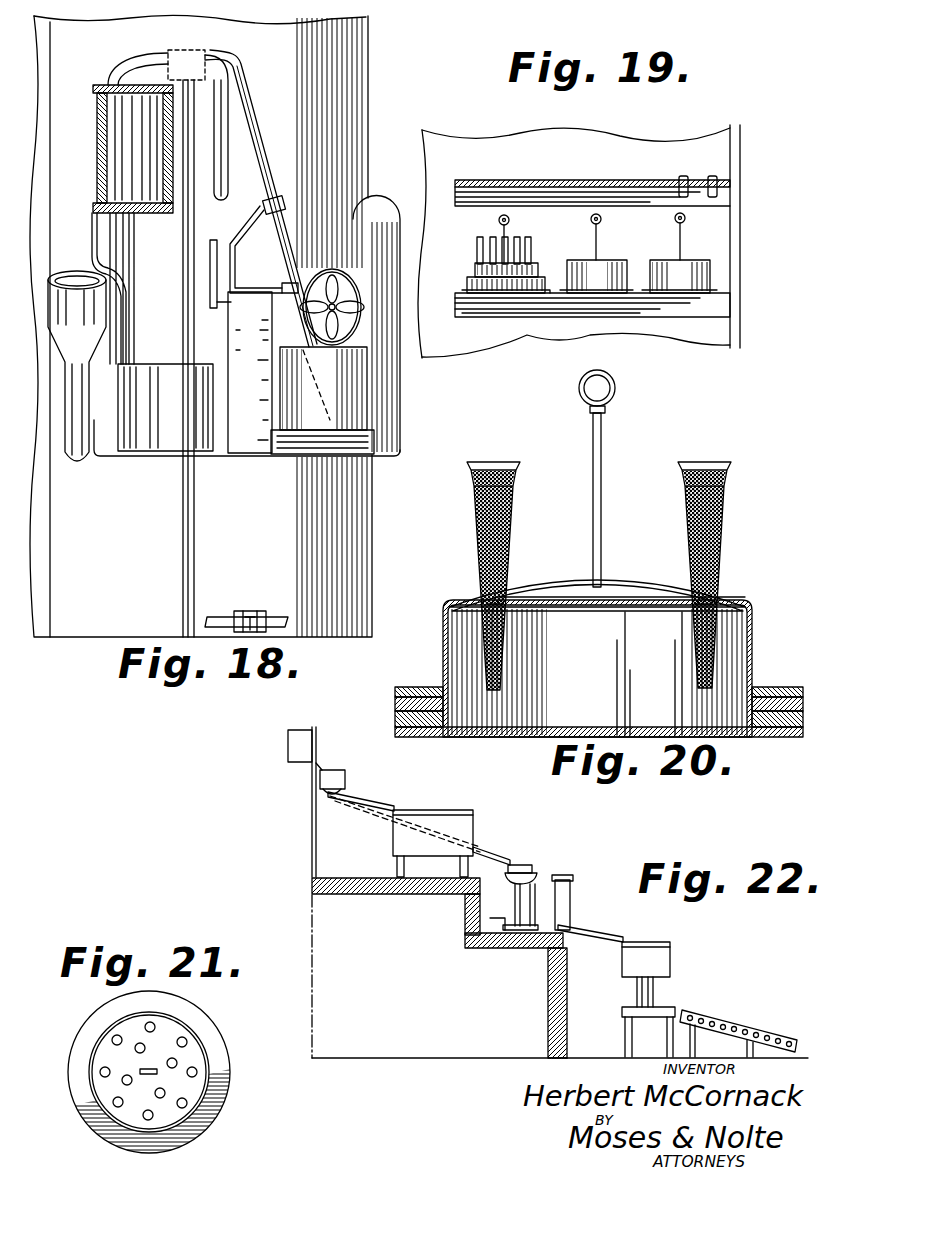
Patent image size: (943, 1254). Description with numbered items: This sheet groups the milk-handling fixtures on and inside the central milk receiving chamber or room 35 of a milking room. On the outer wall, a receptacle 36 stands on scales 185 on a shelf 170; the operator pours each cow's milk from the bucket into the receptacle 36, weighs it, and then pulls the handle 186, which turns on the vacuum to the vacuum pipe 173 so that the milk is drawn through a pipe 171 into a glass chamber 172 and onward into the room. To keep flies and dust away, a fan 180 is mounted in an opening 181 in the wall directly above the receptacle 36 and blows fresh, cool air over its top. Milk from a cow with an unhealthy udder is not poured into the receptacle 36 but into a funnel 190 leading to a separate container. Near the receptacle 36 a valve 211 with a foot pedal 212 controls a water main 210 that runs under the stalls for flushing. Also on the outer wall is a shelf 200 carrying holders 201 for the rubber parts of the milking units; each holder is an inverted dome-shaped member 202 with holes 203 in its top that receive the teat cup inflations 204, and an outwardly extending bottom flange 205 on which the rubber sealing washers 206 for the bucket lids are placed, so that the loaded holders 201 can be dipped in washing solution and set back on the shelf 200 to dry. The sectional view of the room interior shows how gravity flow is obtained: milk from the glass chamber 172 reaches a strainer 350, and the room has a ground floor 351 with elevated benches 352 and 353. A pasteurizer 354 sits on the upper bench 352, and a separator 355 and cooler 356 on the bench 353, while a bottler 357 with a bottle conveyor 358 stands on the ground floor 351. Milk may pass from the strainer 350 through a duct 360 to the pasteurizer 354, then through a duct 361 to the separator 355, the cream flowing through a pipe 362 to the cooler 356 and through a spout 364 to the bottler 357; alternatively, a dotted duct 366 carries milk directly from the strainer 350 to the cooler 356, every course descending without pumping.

In FIG. 18, the milk receiving chamber or room 35 is at (364, 79).
In FIG. 18, the receptacle 36 is at (357, 411).
In FIG. 18, the shelf 170 is at (292, 458).
In FIG. 18, the pipe 171 is at (280, 134).
In FIG. 18, the glass chamber 172 is at (100, 143).
In FIG. 22, the glass chamber 172 is at (292, 758).
In FIG. 18, the vacuum pipe 173 is at (222, 110).
In FIG. 18, the fan 180 is at (352, 272).
In FIG. 18, the opening 181 is at (336, 292).
In FIG. 18, the scales 185 is at (237, 418).
In FIG. 18, the handle 186 is at (212, 274).
In FIG. 18, the funnel 190 is at (88, 338).
In FIG. 19, the shelf 200 is at (727, 297).
In FIG. 19, the holders 201 is at (683, 238).
In FIG. 20, the holders 201 is at (603, 453).
In FIG. 21, the holders 201 is at (140, 1071).
In FIG. 19, the inverted dome-shaped members 202 is at (697, 277).
In FIG. 20, the inverted dome-shaped members 202 is at (638, 586).
In FIG. 21, the inverted dome-shaped members 202 is at (137, 1104).
In FIG. 20, the holes 203 is at (720, 597).
In FIG. 21, the holes 203 is at (196, 1069).
In FIG. 19, the teat cup inflations 204 is at (495, 240).
In FIG. 20, the teat cup inflations 204 is at (720, 506).
In FIG. 20, the bottom flange 205 is at (423, 738).
In FIG. 21, the bottom flange 205 is at (222, 1103).
In FIG. 19, the rubber sealing washers 206 is at (502, 283).
In FIG. 20, the rubber sealing washers 206 is at (393, 724).
In FIG. 18, the water main 210 is at (215, 620).
In FIG. 18, the valve 211 is at (240, 612).
In FIG. 18, the foot pedal 212 is at (251, 611).
In FIG. 22, the strainer 350 is at (318, 781).
In FIG. 22, the ground floor 351 is at (580, 1057).
In FIG. 22, the upper bench 352 is at (342, 878).
In FIG. 22, the bench 353 is at (497, 930).
In FIG. 22, the pasteurizer 354 is at (467, 823).
In FIG. 22, the separator 355 is at (523, 920).
In FIG. 22, the cooler 356 is at (572, 898).
In FIG. 22, the bottler 357 is at (670, 958).
In FIG. 22, the bottle conveyor 358 is at (710, 1013).
In FIG. 22, the duct 360 is at (366, 801).
In FIG. 22, the duct 361 is at (488, 850).
In FIG. 22, the pipe 362 is at (540, 872).
In FIG. 22, the spout 364 is at (600, 928).
In FIG. 22, the duct 366 is at (368, 822).